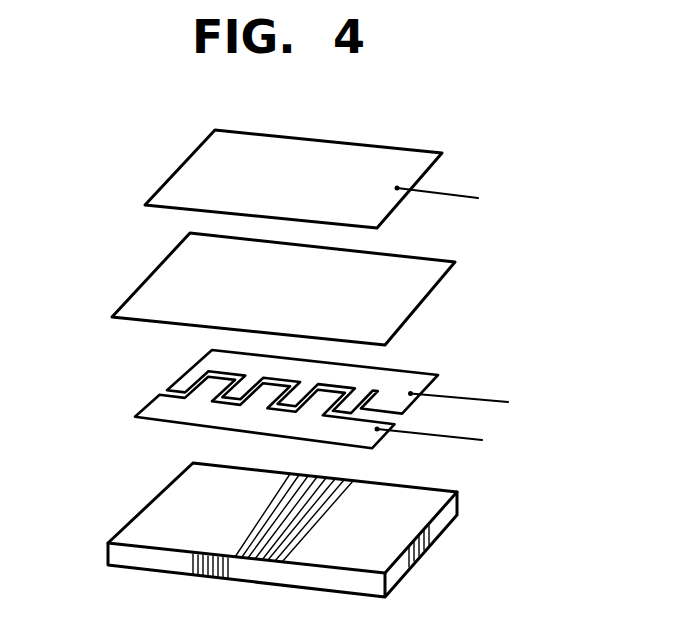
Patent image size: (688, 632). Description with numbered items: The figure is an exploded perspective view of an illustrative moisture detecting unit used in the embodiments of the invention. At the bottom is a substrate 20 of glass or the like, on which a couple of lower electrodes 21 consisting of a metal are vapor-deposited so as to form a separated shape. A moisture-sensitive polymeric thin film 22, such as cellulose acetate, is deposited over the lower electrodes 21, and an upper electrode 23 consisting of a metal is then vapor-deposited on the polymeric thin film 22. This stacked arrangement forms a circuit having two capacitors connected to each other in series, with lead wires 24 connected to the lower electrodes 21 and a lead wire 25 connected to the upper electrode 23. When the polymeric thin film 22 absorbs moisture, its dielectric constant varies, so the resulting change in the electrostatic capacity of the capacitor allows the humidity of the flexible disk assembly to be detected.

The substrate 20 is at (425, 547).
The lower electrodes 21 is at (177, 379).
The moisture-sensitive polymeric thin film 22 is at (433, 292).
The upper electrode 23 is at (323, 140).
The lead wires 24 is at (473, 401).
The lead wire 25 is at (462, 197).